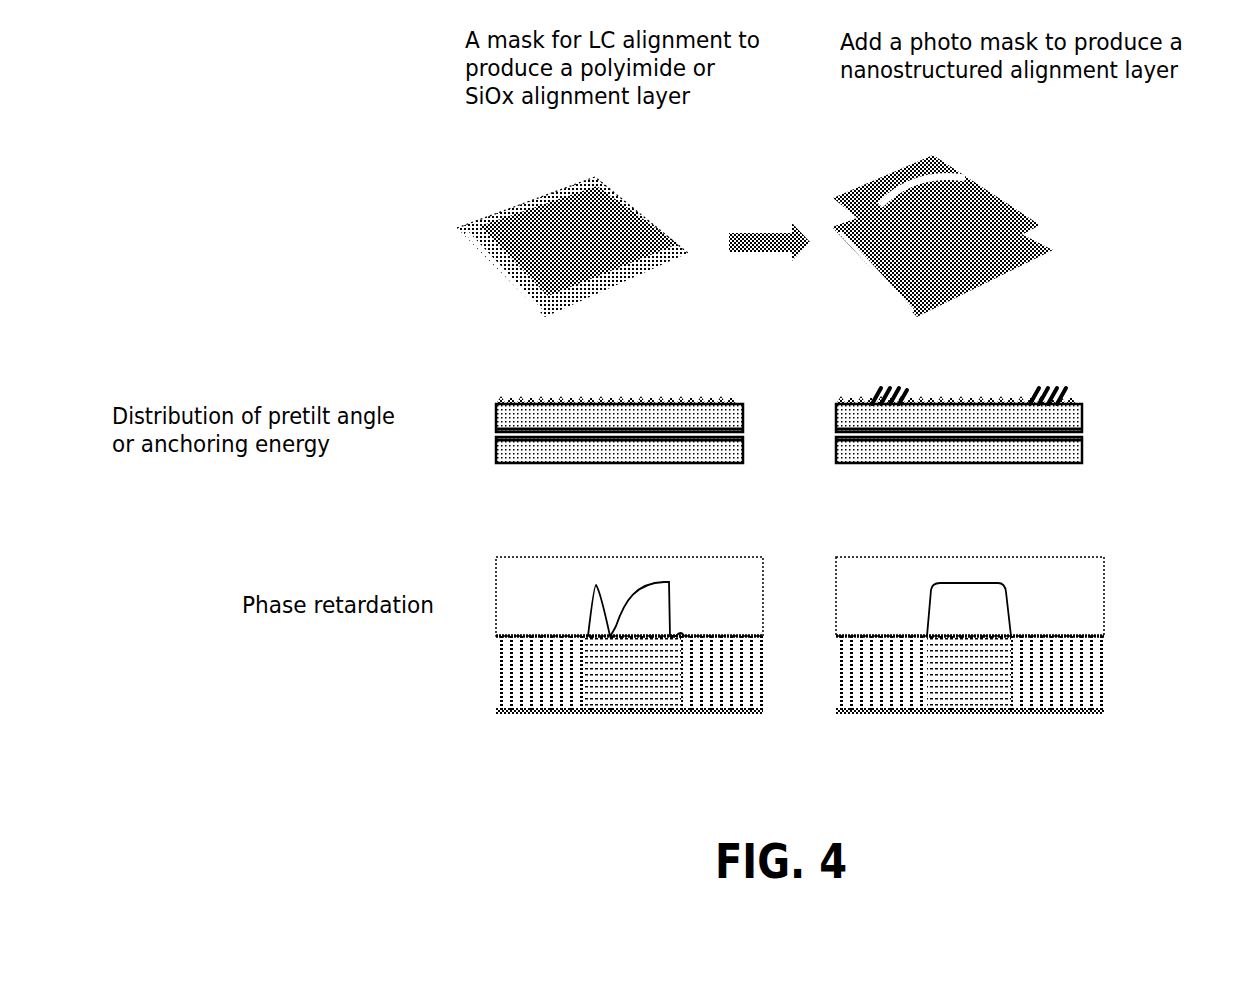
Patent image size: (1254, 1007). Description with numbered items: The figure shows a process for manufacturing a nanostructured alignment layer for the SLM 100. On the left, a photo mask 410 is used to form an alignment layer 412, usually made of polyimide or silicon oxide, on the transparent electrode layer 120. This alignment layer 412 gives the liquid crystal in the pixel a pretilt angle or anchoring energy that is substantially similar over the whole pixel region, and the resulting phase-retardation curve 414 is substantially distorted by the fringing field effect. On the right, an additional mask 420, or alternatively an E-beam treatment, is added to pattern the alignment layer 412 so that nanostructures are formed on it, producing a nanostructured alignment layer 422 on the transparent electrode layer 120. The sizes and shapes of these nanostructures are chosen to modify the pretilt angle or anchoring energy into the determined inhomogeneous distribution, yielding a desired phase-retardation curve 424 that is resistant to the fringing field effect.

The SLM 100 is at (830, 427).
The transparent electrode layer 120 is at (503, 452).
The photo mask 410 is at (572, 232).
The alignment layer 412 is at (503, 414).
The phase-retardation curve 414 is at (668, 572).
The additional mask 420 is at (942, 207).
The nanostructured alignment layer 422 is at (843, 414).
The phase-retardation curve 424 is at (1004, 573).